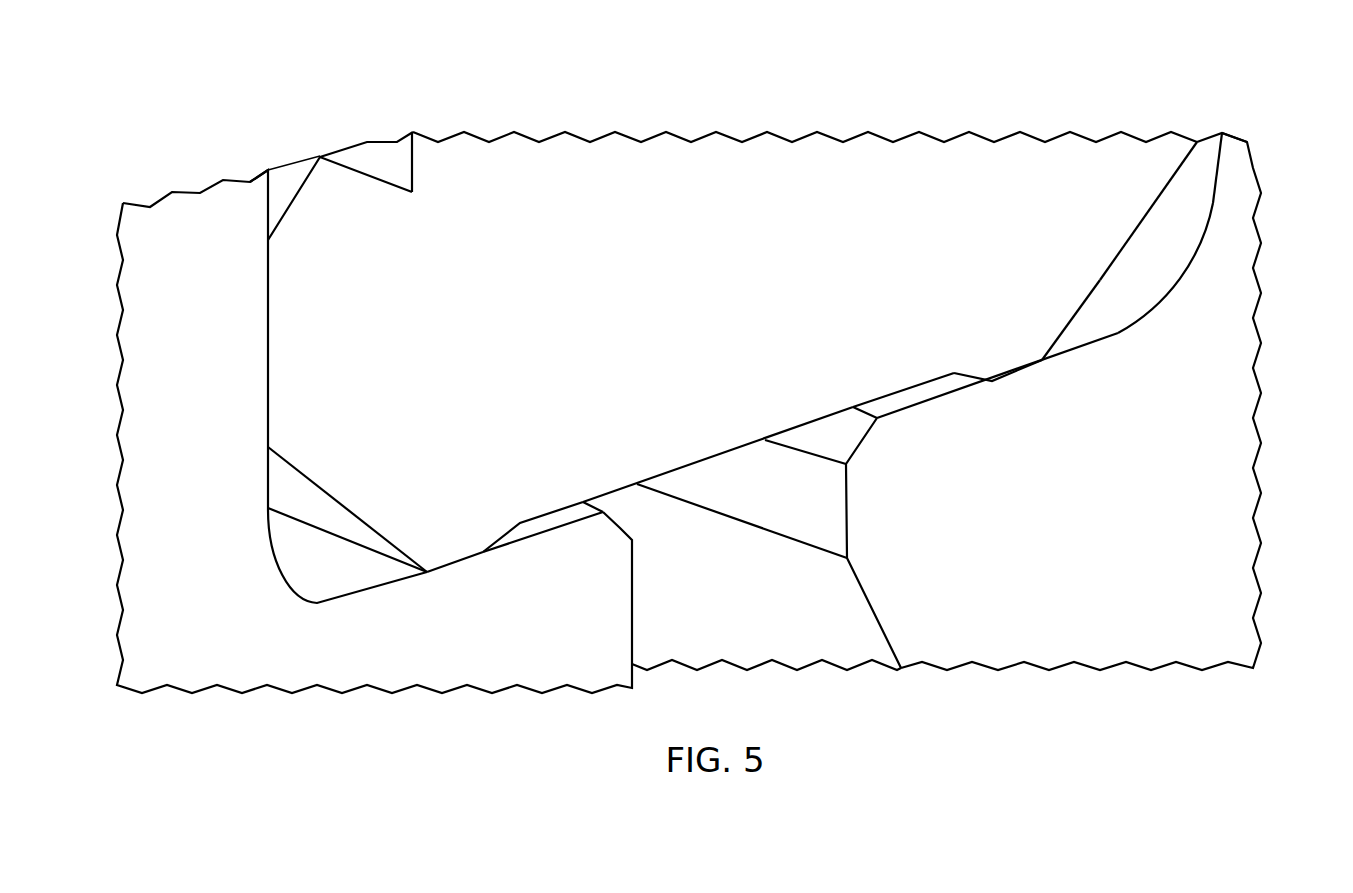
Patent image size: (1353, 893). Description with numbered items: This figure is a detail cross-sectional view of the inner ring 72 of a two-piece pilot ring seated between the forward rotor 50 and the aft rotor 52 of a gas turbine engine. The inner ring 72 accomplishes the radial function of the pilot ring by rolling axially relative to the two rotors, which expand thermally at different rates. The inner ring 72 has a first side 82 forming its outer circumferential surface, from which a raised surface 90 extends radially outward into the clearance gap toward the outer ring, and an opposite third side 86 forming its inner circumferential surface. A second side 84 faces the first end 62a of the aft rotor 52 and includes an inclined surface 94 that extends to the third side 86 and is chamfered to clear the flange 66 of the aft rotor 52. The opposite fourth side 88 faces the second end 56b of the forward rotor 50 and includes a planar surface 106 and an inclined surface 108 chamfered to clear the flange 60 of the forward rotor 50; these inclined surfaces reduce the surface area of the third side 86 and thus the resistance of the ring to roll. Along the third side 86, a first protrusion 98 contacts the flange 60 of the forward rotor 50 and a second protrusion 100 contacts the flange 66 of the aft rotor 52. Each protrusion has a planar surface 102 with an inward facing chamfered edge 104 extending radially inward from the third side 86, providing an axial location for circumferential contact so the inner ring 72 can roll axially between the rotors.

The forward rotor 50 is at (157, 165).
The aft rotor 52 is at (1249, 123).
The second end 56b is at (268, 175).
The flange 60 is at (352, 587).
The first end 62a is at (1212, 225).
The flange 66 is at (1068, 332).
The inner ring 72 is at (688, 115).
The first side 82 is at (315, 183).
The second side 84 is at (1234, 180).
The third side 86 is at (713, 534).
The fourth side 88 is at (260, 337).
The raised surface 90 is at (395, 153).
The inclined surface 94 is at (1122, 248).
The first protrusion 98 is at (478, 568).
The second protrusion 100 is at (1029, 374).
The surface 102 is at (438, 572).
The chamfered edge 104 is at (512, 535).
The planar surface 106 is at (267, 397).
The inclined surface 108 is at (279, 474).